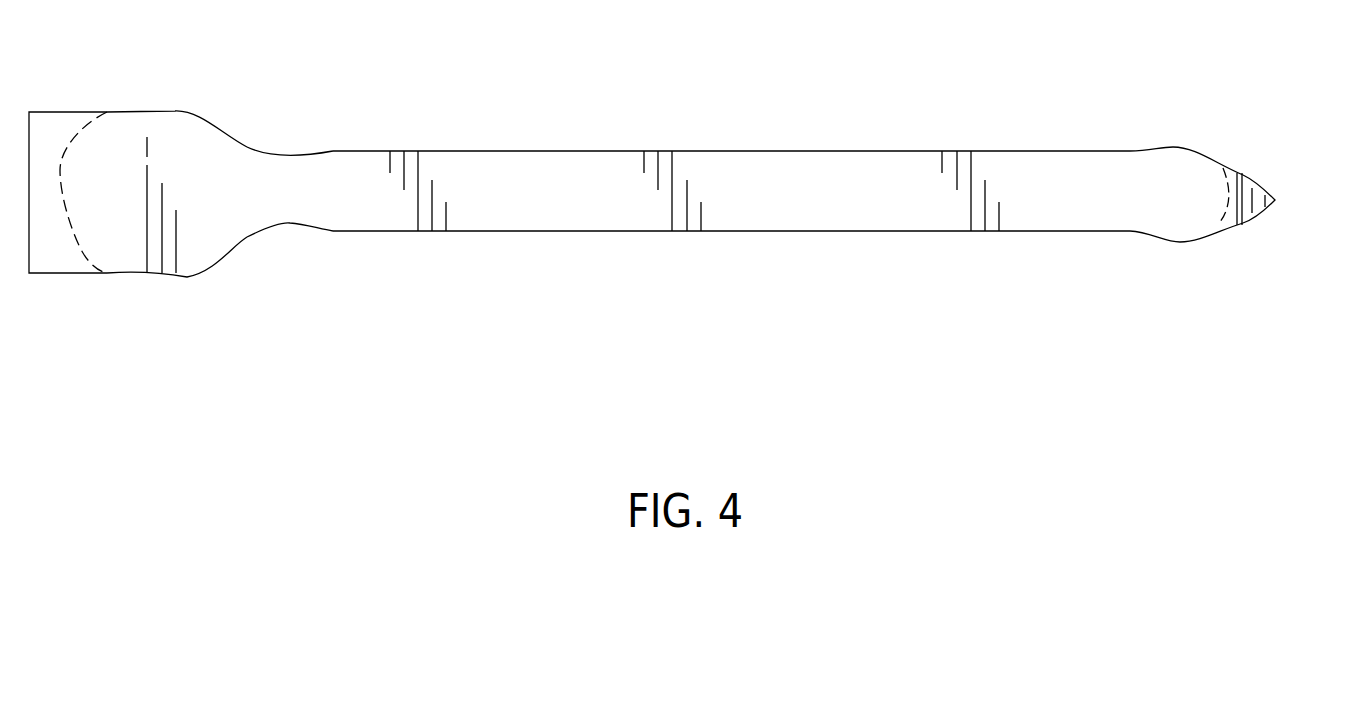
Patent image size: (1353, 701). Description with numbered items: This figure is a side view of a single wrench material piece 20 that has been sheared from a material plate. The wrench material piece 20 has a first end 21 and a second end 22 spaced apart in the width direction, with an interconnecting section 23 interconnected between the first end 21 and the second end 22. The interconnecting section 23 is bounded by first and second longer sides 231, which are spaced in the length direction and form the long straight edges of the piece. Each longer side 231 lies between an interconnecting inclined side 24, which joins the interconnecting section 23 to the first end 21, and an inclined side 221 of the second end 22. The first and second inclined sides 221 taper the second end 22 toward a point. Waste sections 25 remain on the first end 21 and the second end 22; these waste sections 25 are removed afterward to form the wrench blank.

The wrench material piece 20 is at (60, 292).
The first end 21 is at (132, 143).
The second end 22 is at (1174, 187).
The inclined side 221 is at (1243, 175).
The interconnecting section 23 is at (733, 185).
The longer side 231 is at (604, 151).
The interconnecting inclined side 24 is at (247, 147).
The waste section 25 is at (50, 143).